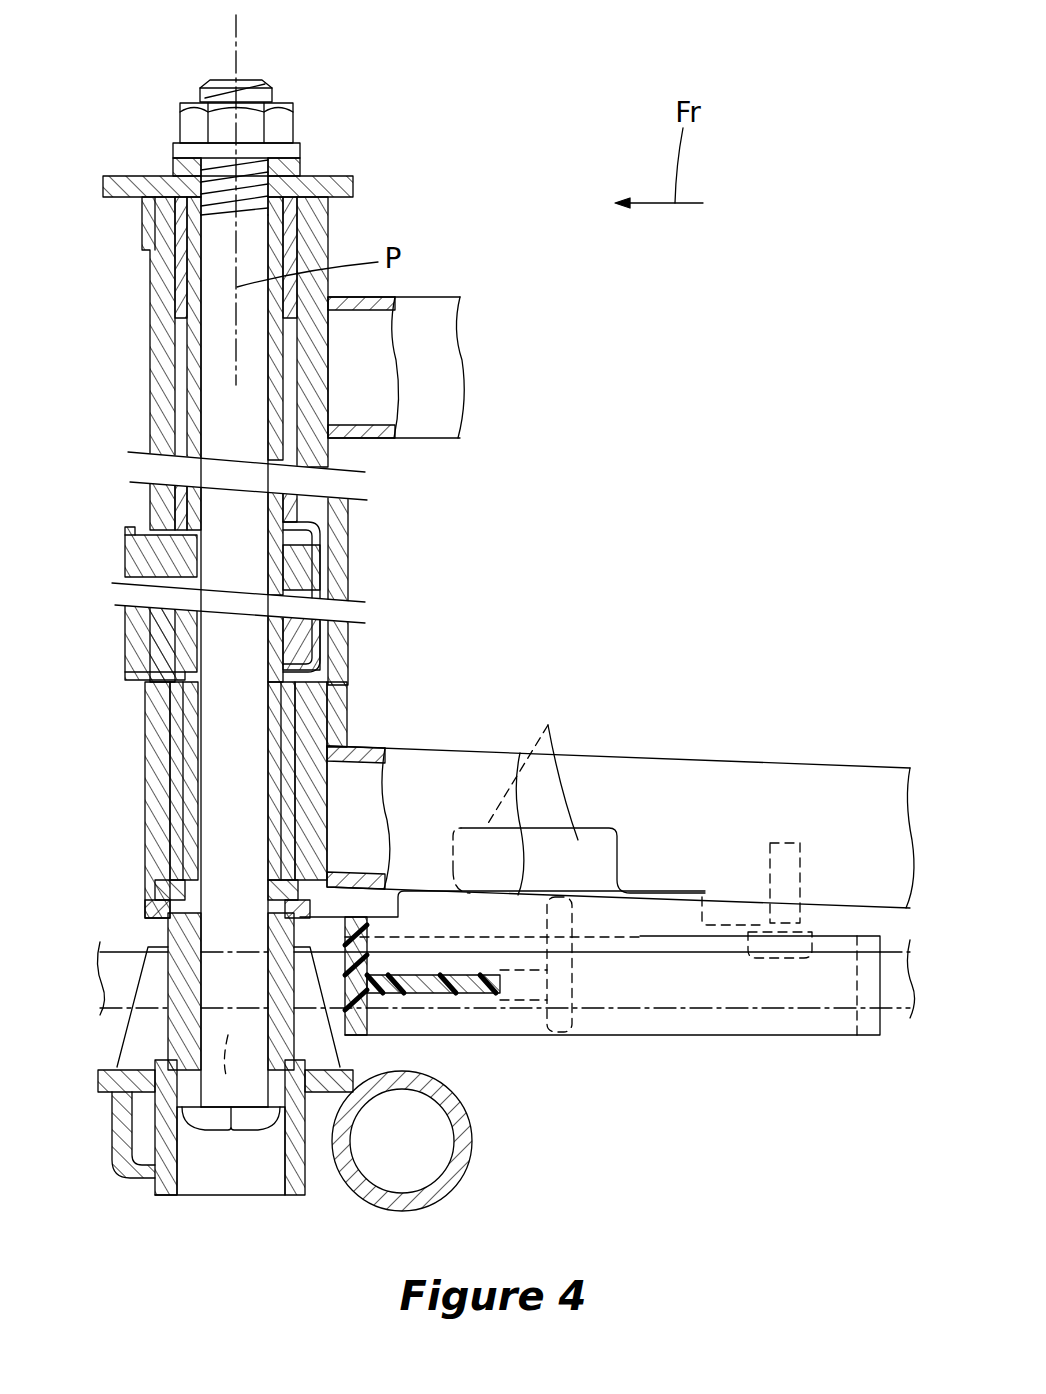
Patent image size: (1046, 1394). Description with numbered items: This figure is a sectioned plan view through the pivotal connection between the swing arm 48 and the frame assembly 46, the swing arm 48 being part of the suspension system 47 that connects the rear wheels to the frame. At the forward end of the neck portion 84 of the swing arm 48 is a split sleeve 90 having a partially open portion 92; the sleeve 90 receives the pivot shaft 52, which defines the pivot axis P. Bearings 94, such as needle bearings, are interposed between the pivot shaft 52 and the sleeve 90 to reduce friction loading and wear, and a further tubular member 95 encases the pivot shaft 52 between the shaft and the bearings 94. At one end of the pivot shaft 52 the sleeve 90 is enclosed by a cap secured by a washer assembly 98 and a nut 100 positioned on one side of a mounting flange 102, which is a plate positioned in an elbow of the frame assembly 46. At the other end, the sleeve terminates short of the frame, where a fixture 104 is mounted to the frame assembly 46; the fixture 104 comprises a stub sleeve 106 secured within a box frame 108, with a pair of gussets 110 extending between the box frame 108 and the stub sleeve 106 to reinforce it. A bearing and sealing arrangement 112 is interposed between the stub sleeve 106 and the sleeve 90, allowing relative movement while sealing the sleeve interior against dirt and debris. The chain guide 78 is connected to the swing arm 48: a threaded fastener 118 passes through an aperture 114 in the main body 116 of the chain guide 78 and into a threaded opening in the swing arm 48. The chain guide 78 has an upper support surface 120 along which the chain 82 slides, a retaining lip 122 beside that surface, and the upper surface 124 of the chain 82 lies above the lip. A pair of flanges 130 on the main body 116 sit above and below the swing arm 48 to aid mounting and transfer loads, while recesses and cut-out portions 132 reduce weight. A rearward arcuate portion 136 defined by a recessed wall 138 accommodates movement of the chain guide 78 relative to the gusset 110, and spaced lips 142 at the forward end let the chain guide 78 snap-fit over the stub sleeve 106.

The frame assembly 46 is at (347, 173).
The suspension system 47 is at (866, 1085).
The swing arm 48 is at (778, 648).
The pivot shaft 52 is at (250, 730).
The chain guide 78 is at (655, 860).
The chain 82 is at (790, 1042).
The neck portion 84 is at (440, 305).
The split sleeve 90 is at (340, 560).
The partially open portion 92 is at (108, 521).
The bearings 94 is at (335, 330).
The tubular member 95 is at (280, 440).
The washer assembly 98 is at (175, 172).
The nut 100 is at (278, 110).
The mounting flange 102 is at (327, 175).
The fixture 104 is at (128, 1180).
The stub sleeve 106 is at (315, 1062).
The box frame 108 is at (113, 1135).
The gussets 110 is at (150, 985).
The bearing and sealing arrangement 112 is at (126, 853).
The aperture 114 is at (805, 920).
The main body 116 is at (597, 1035).
The threaded fastener 118 is at (812, 840).
The upper support surface 120 is at (715, 985).
The retaining lip 122 is at (685, 915).
The upper surface of the chain 124 is at (765, 1040).
The flanges 130 is at (533, 766).
The recesses and cut-out portions 132 is at (438, 926).
The rearward arcuate portion 136 is at (355, 1040).
The recessed wall 138 is at (385, 1020).
The spaced lips 142 is at (228, 1054).